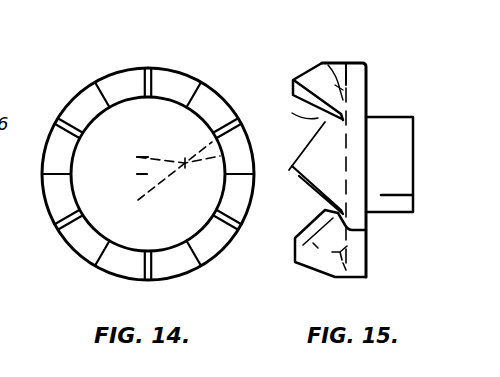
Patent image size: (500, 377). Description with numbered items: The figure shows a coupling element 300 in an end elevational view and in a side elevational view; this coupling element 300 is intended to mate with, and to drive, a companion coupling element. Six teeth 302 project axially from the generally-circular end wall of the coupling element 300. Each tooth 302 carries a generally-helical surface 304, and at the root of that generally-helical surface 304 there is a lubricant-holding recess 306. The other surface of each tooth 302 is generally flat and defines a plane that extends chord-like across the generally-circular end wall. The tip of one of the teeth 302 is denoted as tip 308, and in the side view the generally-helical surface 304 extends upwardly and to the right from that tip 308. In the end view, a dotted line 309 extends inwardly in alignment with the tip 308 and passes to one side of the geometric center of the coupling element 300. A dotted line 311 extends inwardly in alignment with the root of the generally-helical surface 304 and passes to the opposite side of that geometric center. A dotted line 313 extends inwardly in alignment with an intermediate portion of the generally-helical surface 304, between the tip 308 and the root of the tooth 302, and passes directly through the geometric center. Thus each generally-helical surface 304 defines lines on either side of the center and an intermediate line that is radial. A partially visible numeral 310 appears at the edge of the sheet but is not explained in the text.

In FIG. 14, the coupling element 300 is at (113, 61).
In FIG. 15, the coupling element 300 is at (378, 112).
In FIG. 14, the teeth 302 is at (239, 173).
In FIG. 15, the teeth 302 is at (314, 68).
In FIG. 14, the generally-helical surface 304 is at (243, 118).
In FIG. 15, the generally-helical surface 304 is at (310, 146).
In FIG. 14, the lubricant-holding recess 306 is at (152, 65).
In FIG. 15, the lubricant-holding recess 306 is at (377, 242).
In FIG. 14, the tip 308 is at (199, 80).
In FIG. 15, the tip 308 is at (296, 167).
In FIG. 14, the dotted line 309 is at (186, 164).
In FIG. 14, the adjacent element 310 is at (14, 159).
In FIG. 14, the dotted line 311 is at (185, 162).
In FIG. 14, the dotted line 313 is at (140, 174).